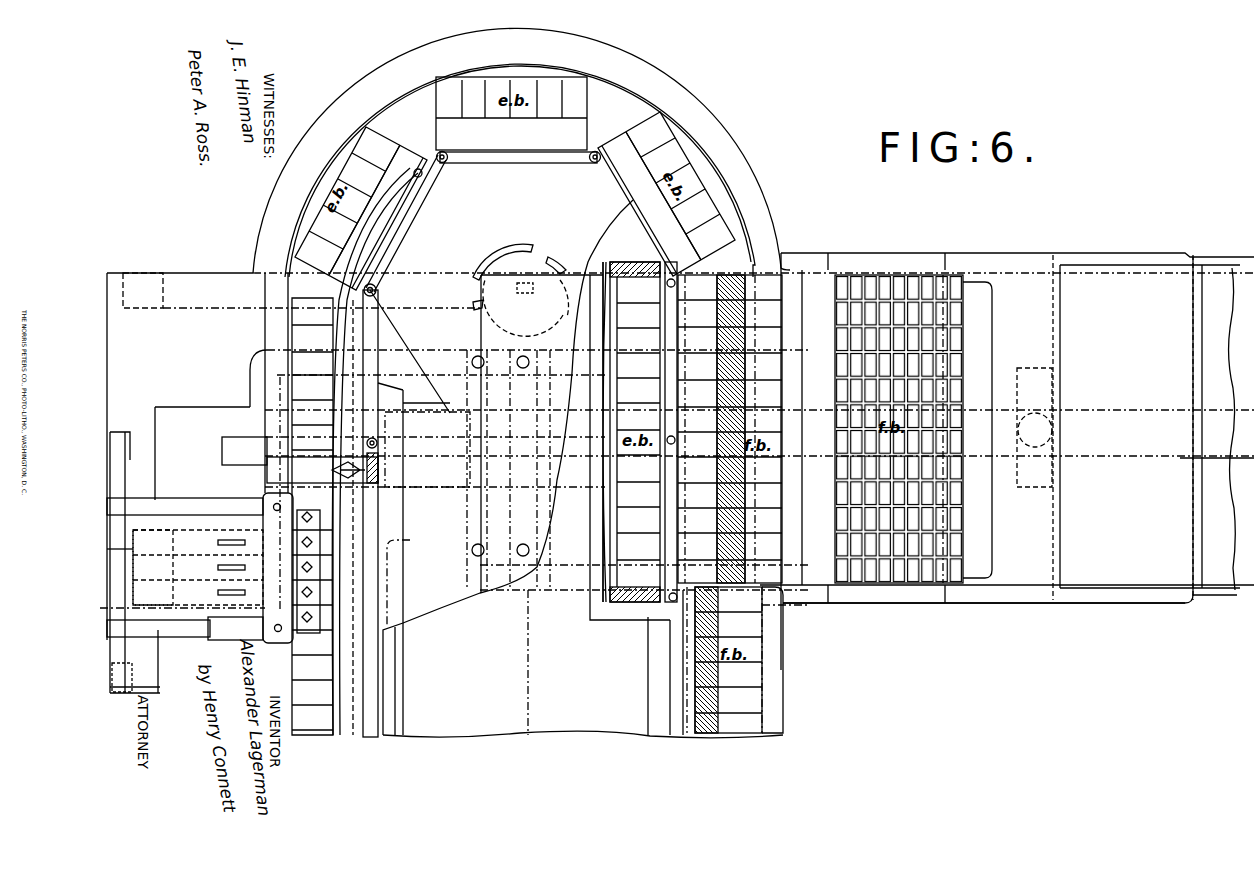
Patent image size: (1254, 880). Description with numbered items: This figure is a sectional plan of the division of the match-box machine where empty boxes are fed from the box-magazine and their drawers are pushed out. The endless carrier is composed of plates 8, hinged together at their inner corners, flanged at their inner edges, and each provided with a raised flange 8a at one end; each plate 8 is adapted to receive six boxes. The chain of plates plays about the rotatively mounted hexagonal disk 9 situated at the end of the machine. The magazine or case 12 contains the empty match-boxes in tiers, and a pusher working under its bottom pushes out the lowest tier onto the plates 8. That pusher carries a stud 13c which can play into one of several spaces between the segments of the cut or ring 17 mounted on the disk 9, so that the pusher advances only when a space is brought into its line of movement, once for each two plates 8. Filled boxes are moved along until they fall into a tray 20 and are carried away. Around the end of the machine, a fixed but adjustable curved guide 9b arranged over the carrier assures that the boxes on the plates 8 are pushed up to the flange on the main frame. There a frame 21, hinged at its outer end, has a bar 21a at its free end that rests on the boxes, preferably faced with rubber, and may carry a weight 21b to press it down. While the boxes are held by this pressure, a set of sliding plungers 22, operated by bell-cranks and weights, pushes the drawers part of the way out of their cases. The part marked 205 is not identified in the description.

The plates 8 is at (688, 676).
The raised flange 8a is at (397, 143).
The hexagonal wheel or disk 9 is at (576, 457).
The curved guide 9b is at (372, 243).
The magazine or case 12 is at (607, 537).
The stud 13c is at (526, 307).
The cut or ring 17 is at (505, 256).
The tray 20 is at (960, 590).
The base frame extension 205 is at (116, 550).
The frame 21 is at (205, 498).
The bar 21a is at (320, 520).
The weight 21b is at (300, 565).
The sliding plungers 22 is at (198, 567).